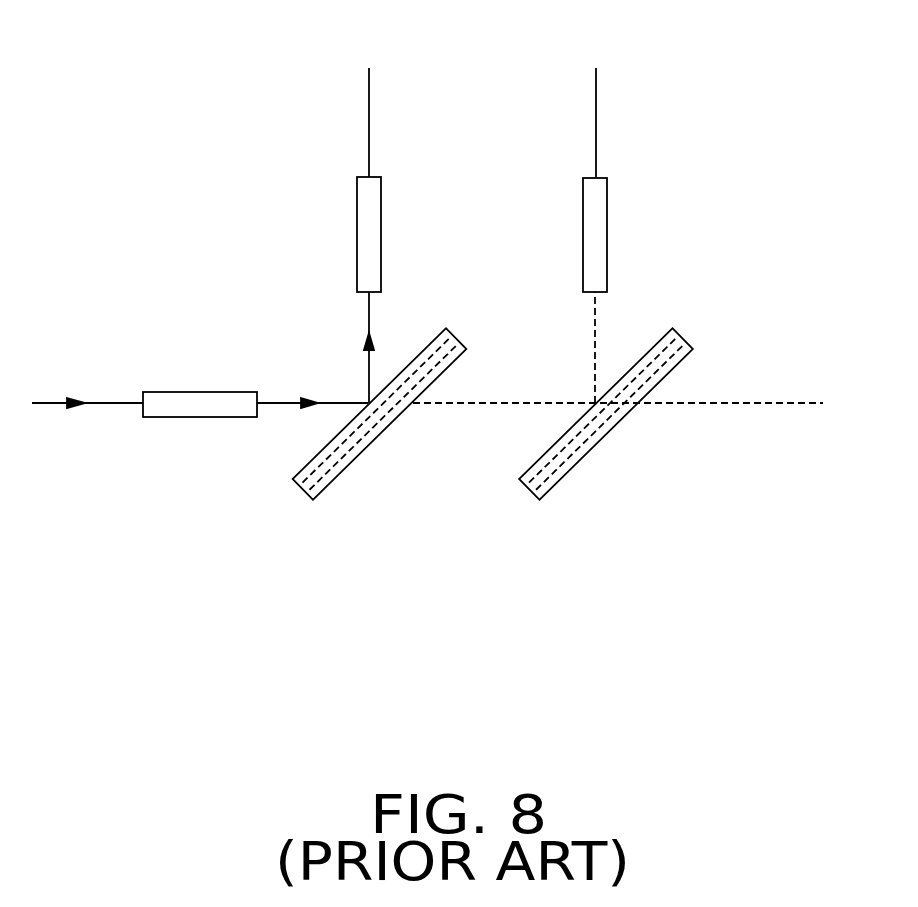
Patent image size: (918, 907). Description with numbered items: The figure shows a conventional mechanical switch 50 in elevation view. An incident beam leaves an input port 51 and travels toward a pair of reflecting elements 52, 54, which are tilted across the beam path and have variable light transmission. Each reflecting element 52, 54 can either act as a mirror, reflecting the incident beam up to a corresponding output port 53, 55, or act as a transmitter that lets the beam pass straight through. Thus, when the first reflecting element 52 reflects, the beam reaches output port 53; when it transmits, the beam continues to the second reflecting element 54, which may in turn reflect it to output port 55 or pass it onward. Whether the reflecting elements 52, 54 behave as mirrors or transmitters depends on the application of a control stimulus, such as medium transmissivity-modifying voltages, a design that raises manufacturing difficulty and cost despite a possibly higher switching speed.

The mechanical switch 50 is at (203, 76).
The input port 51 is at (207, 398).
The reflecting element 52 is at (307, 463).
The output port 53 is at (370, 206).
The reflecting element 54 is at (663, 333).
The output port 55 is at (601, 197).